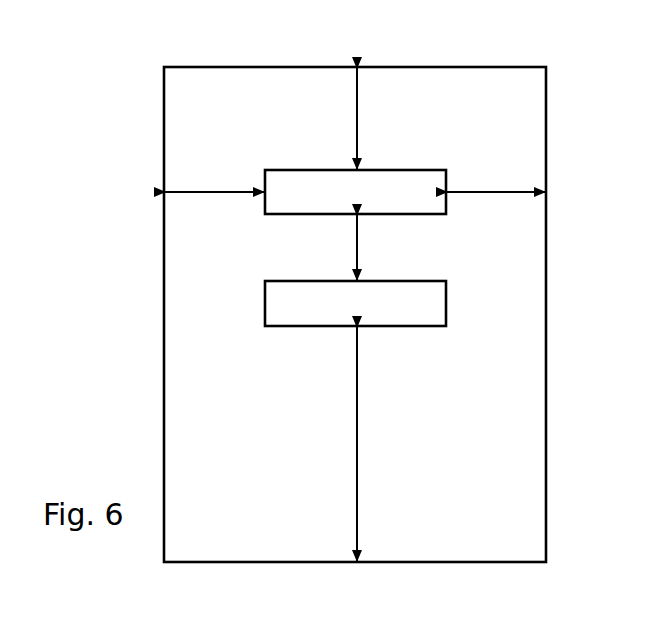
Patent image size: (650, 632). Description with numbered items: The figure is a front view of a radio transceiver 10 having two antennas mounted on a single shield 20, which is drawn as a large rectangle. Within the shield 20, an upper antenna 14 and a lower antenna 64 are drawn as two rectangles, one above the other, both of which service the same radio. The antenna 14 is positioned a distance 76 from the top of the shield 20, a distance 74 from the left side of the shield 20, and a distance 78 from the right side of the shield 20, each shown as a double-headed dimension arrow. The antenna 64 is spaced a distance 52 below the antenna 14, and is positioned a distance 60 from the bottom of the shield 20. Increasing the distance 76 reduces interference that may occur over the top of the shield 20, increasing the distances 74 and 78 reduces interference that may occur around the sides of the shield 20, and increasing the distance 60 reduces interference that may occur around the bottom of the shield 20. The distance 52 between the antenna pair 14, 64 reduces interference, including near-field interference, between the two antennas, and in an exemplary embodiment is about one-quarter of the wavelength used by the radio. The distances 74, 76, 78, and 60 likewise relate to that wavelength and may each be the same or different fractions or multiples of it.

The radio transceiver 10 is at (373, 40).
The shield 20 is at (547, 530).
The antenna 14 is at (371, 203).
The antenna 64 is at (371, 316).
The distance 76 is at (358, 118).
The distance 52 is at (358, 252).
The distance 60 is at (358, 430).
The distance 74 is at (240, 190).
The distance 78 is at (482, 190).